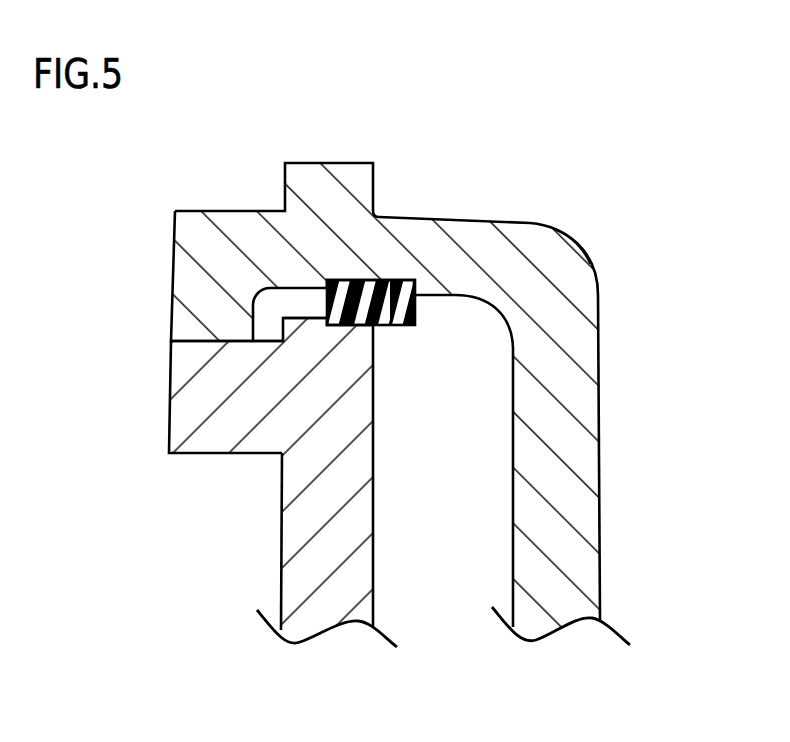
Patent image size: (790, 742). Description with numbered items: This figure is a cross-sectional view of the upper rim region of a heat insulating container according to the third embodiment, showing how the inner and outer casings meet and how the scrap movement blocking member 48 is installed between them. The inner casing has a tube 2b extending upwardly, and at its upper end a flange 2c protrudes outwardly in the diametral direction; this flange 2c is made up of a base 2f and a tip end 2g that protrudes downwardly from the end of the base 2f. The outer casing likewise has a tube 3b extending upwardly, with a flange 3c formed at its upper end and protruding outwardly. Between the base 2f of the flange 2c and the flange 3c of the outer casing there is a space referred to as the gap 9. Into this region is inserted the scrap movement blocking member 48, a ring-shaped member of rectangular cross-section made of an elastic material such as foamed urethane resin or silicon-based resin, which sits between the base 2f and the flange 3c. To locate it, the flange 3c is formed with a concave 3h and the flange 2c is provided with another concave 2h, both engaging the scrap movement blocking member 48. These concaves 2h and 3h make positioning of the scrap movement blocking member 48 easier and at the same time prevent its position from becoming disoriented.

The flange 2c is at (197, 228).
The tip end 2g is at (192, 293).
The gap 9 is at (313, 304).
The base 2f is at (477, 237).
The tube 2b is at (585, 518).
The concave 2h is at (390, 326).
The concave 3h is at (350, 281).
The flange 3c is at (192, 383).
The tube 3b is at (293, 528).
The scrap movement blocking member 48 is at (414, 310).